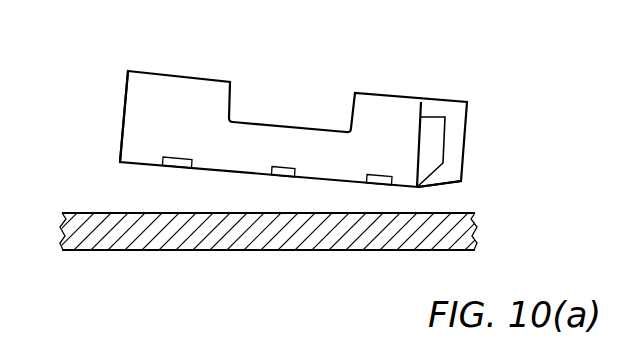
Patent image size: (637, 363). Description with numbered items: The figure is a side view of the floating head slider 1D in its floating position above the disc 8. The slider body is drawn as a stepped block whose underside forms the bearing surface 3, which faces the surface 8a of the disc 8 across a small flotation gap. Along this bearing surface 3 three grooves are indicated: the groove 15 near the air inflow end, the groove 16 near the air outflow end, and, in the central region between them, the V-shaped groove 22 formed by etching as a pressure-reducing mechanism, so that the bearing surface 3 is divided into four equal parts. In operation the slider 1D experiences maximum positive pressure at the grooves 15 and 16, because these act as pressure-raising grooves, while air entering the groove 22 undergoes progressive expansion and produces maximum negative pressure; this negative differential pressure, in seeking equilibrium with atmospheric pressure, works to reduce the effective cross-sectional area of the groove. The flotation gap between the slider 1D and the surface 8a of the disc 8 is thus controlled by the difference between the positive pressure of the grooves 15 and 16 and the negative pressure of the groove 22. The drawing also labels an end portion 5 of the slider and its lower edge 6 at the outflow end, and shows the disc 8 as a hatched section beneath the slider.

The floating head slider 1D is at (153, 72).
The bearing surface 3 is at (325, 183).
The end wall portion 5 is at (453, 138).
The bottom edge of end wall 6 is at (418, 187).
The groove 15 is at (173, 168).
The V-shaped groove 22 is at (278, 176).
The groove 16 is at (377, 185).
The disc 8 is at (357, 233).
The surface of the disc 8a is at (425, 211).